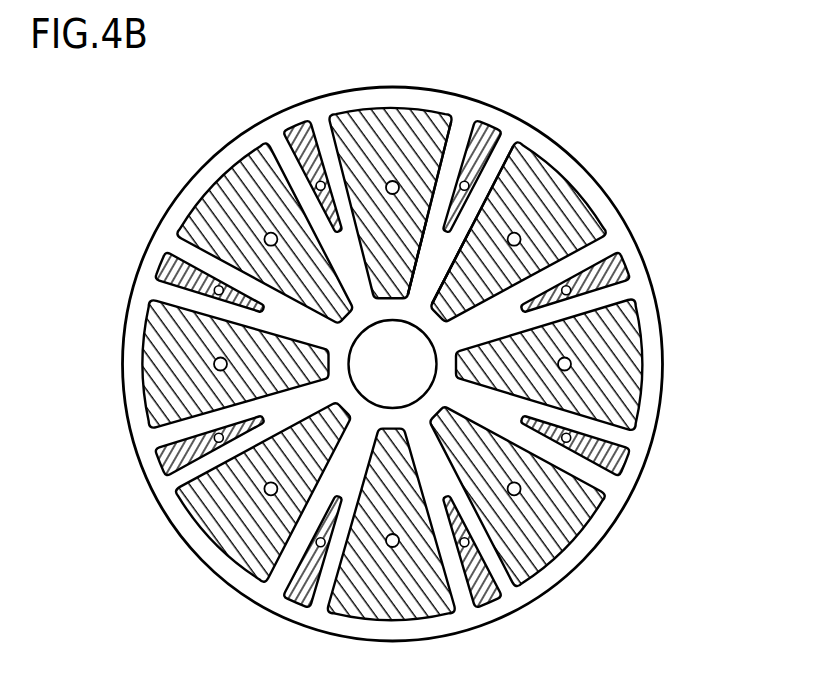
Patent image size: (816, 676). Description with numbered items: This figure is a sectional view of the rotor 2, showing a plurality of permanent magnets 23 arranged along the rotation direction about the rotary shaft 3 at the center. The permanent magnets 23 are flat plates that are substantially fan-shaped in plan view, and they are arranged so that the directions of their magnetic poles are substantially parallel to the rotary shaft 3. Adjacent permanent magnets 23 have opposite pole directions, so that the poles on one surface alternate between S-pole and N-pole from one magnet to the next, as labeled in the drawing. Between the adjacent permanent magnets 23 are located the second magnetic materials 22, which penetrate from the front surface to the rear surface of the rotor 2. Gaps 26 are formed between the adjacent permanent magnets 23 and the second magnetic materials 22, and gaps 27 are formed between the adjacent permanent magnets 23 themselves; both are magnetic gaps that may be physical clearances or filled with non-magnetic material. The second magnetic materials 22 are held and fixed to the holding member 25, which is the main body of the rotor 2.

The rotor 2 is at (434, 323).
The rotary shaft 3 is at (400, 352).
The second magnetic material 22 is at (506, 148).
The permanent magnet 23 is at (566, 186).
The holding member 25 is at (622, 230).
The first gap 26 is at (460, 134).
The gap 27 is at (432, 258).